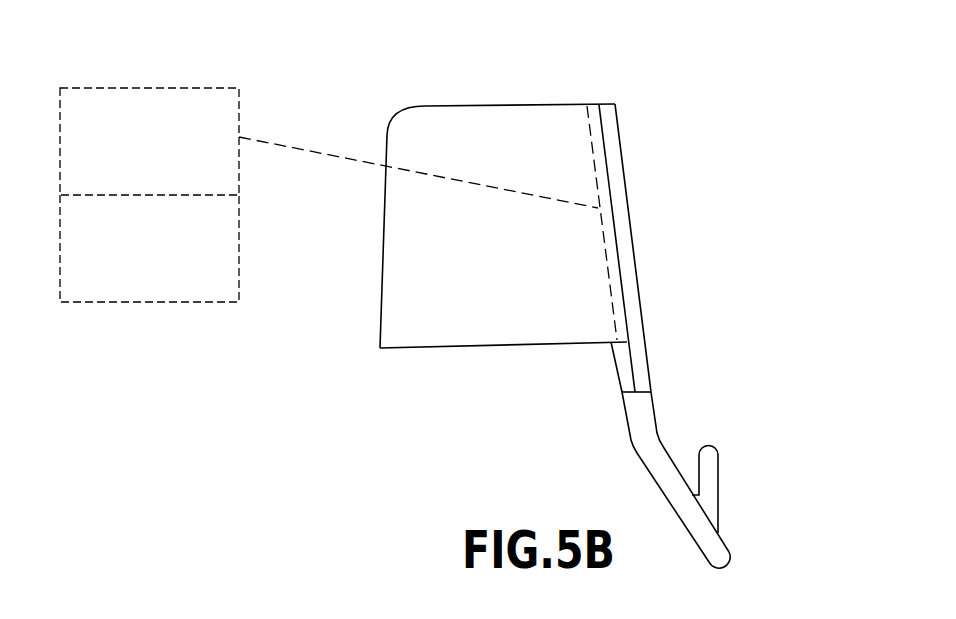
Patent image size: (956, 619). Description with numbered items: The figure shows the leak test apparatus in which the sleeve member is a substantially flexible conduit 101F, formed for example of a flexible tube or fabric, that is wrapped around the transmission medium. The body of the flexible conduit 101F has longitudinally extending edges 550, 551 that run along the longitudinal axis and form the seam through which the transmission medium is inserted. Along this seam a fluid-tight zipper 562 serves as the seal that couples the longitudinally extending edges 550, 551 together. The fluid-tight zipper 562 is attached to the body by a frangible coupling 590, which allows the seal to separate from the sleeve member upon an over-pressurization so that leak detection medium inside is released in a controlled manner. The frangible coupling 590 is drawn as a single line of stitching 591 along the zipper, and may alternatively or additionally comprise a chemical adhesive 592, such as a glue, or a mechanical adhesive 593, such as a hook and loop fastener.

The substantially flexible conduit 101F is at (433, 333).
The longitudinally extending edge 550 is at (641, 172).
The longitudinally extending edge 551 is at (652, 119).
The frangible coupling 590 is at (612, 249).
The single line of stitching 591 is at (608, 277).
The fluid-tight zipper 562 is at (658, 437).
The chemical adhesive 592 is at (175, 87).
The mechanical adhesive 593 is at (125, 304).